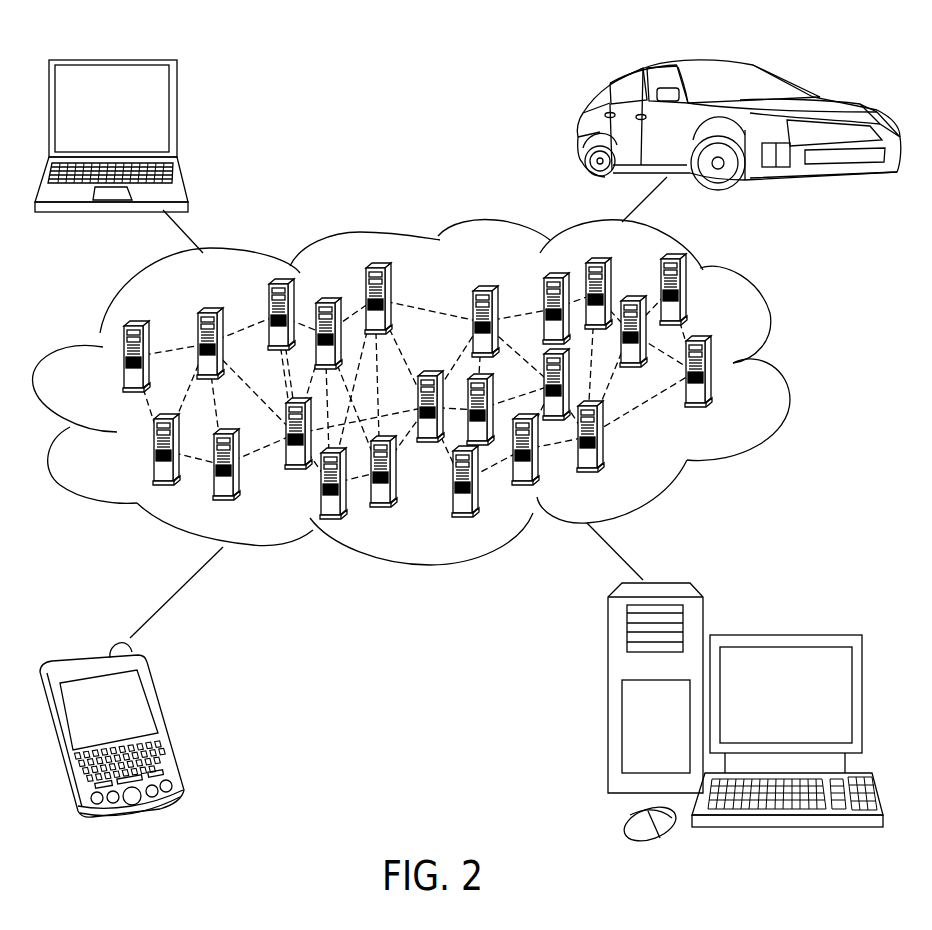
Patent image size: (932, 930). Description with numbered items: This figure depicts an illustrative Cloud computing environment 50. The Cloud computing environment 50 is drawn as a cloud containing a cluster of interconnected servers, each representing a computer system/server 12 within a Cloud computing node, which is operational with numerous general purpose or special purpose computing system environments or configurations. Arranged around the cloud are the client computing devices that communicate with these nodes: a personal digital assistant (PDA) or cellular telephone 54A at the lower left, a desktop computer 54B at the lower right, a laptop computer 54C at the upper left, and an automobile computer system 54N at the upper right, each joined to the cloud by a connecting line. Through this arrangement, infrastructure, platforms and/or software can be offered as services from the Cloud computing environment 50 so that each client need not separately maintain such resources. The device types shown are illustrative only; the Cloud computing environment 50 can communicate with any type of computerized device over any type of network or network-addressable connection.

The laptop computer 54C is at (175, 115).
The automobile computer system 54N is at (580, 128).
The Cloud computing environment 50 is at (787, 373).
The computer system/server 12 is at (742, 398).
The personal digital assistant (PDA) or cellular telephone 54A is at (167, 718).
The desktop computer 54B is at (783, 635).